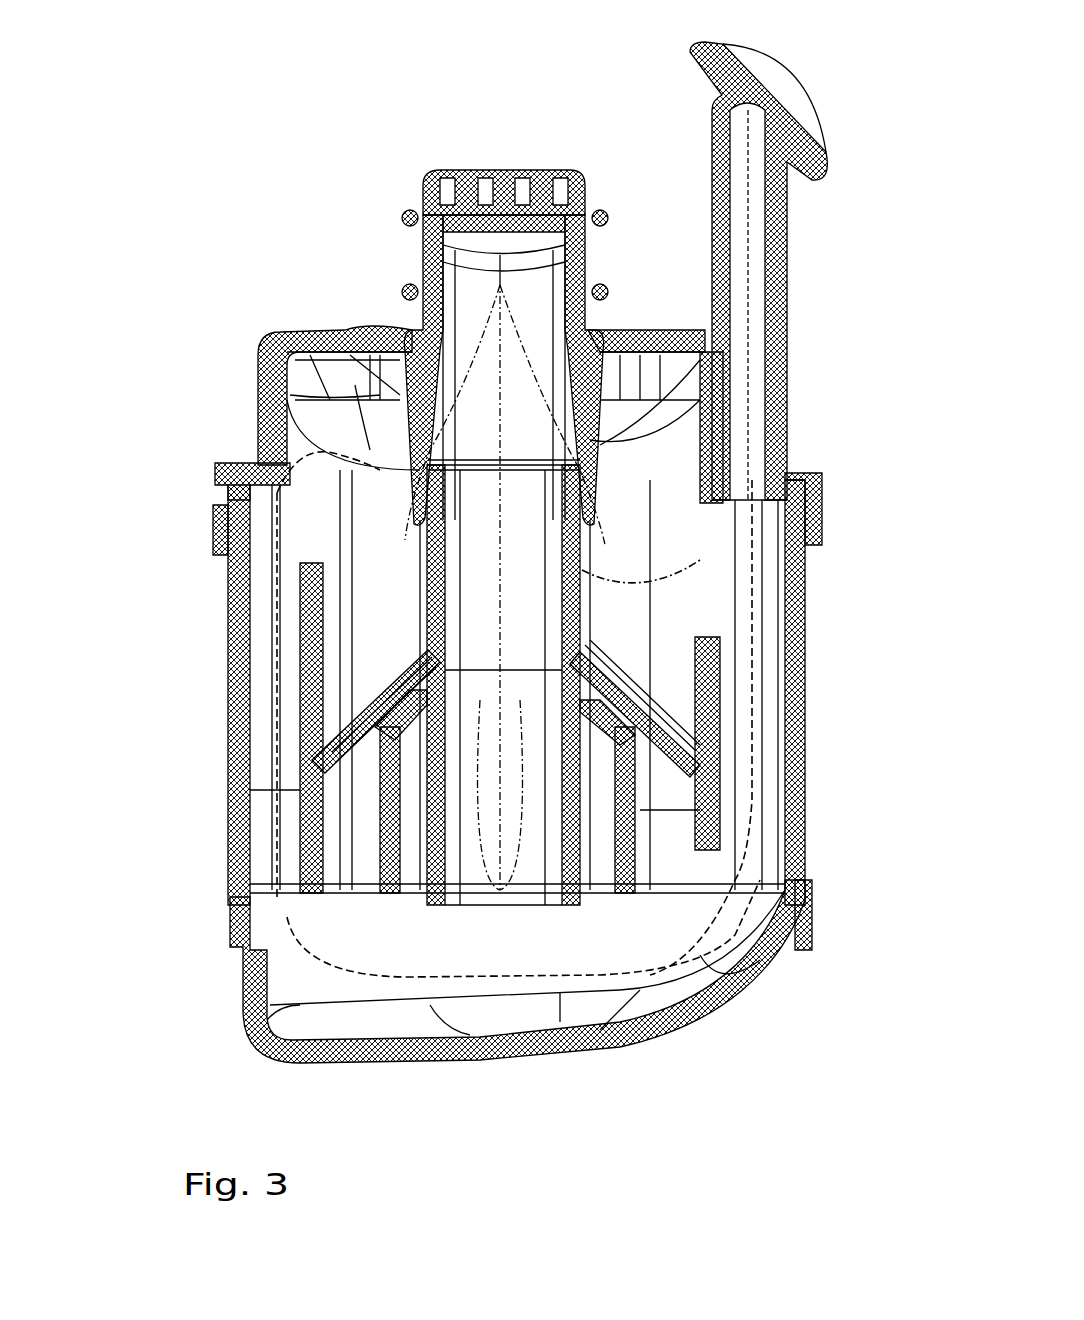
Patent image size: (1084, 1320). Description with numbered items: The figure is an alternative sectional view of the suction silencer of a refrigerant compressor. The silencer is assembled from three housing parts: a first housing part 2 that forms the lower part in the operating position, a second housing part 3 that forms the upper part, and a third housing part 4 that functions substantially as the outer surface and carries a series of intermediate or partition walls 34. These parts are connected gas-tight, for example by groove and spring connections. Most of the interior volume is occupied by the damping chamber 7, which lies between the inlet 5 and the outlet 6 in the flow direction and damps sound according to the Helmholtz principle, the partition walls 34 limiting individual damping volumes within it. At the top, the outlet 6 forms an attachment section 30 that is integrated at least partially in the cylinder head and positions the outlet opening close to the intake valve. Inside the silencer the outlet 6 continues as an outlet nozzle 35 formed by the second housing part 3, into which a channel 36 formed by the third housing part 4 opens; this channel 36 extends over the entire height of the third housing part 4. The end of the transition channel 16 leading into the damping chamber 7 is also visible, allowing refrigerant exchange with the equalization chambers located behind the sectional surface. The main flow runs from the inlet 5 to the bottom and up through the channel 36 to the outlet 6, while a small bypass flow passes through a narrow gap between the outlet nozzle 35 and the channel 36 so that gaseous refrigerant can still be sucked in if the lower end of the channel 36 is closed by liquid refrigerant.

The first housing part 2 is at (245, 1015).
The second housing part 3 is at (257, 407).
The third housing part 4 is at (228, 742).
The inlet 5 is at (782, 315).
The outlet 6 is at (505, 172).
The damping chamber 7 is at (514, 724).
The transition channel 16 is at (345, 328).
The attachment section 30 is at (386, 302).
The intermediate or partition walls 34 is at (380, 700).
The outlet nozzle 35 is at (610, 450).
The channel 36 is at (615, 580).